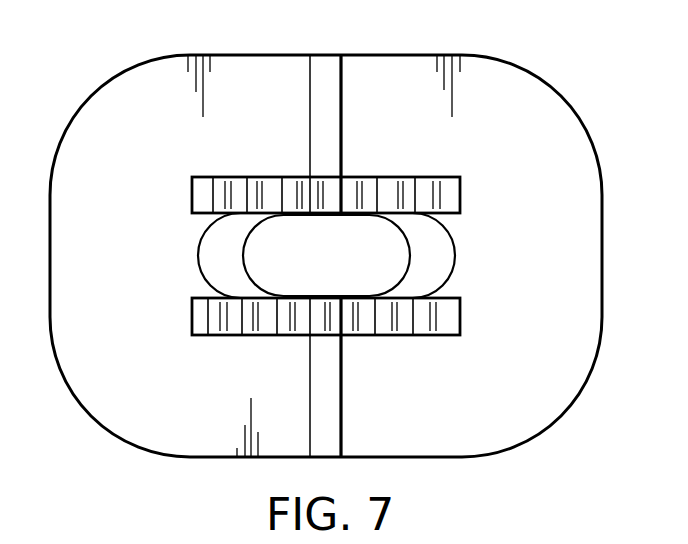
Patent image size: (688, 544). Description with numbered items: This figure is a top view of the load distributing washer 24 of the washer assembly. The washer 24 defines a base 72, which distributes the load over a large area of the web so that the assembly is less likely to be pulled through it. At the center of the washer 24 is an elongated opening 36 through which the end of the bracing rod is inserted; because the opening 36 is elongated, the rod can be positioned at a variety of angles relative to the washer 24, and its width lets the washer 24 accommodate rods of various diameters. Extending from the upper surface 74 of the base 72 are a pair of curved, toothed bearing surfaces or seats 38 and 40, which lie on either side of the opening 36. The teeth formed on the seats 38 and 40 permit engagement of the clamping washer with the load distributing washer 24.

The load distributing washer 24 is at (534, 69).
The upper surface 74 is at (168, 144).
The base 72 is at (325, 68).
The curved, toothed bearing surface or seat 38 is at (386, 177).
The curved, toothed bearing surface or seat 40 is at (413, 335).
The elongated opening 36 is at (250, 240).